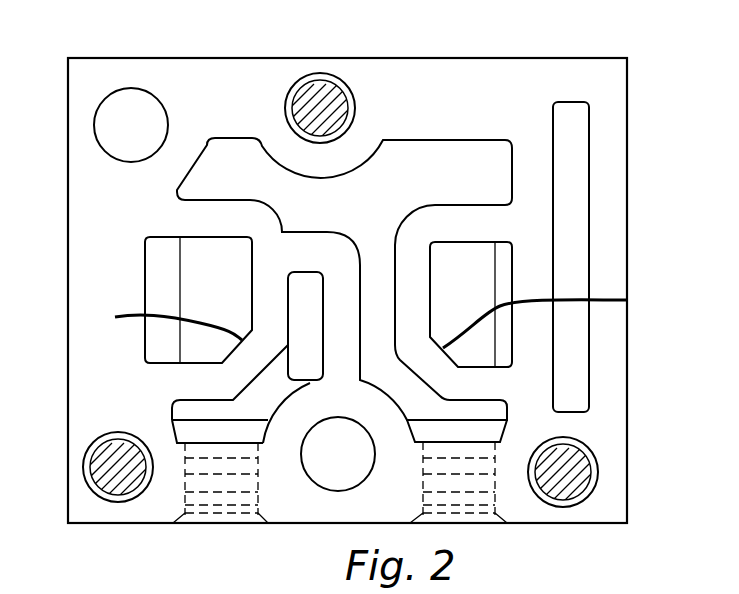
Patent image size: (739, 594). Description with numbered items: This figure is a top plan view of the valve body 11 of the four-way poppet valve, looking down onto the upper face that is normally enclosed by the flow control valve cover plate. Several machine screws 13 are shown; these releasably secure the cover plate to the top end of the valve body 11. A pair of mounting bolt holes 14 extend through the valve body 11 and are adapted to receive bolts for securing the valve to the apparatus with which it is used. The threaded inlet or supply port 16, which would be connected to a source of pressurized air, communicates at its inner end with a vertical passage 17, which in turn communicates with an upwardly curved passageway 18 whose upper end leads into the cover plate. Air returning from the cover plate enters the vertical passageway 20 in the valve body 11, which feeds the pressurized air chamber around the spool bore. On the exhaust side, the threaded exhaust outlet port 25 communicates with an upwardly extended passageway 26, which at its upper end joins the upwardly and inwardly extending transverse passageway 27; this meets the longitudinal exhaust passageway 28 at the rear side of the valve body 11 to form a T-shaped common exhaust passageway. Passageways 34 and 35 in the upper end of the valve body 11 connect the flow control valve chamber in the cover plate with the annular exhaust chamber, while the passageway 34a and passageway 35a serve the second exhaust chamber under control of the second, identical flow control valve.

The valve body 11 is at (80, 214).
The machine screws 13 is at (320, 90).
The mounting bolt holes 14 is at (150, 92).
The inlet or supply port 16 is at (185, 480).
The vertical passage 17 is at (208, 437).
The upwardly curved passageway 18 is at (284, 392).
The vertical passageway 20 is at (313, 340).
The exhaust outlet port 25 is at (487, 505).
The upwardly extended passageway 26 is at (458, 438).
The transverse passageway 27 is at (386, 280).
The longitudinal exhaust passageway 28 is at (433, 165).
The passageway 34 is at (163, 323).
The passageway 34a is at (560, 319).
The passageway 35 is at (164, 240).
The passageway 35a is at (496, 256).